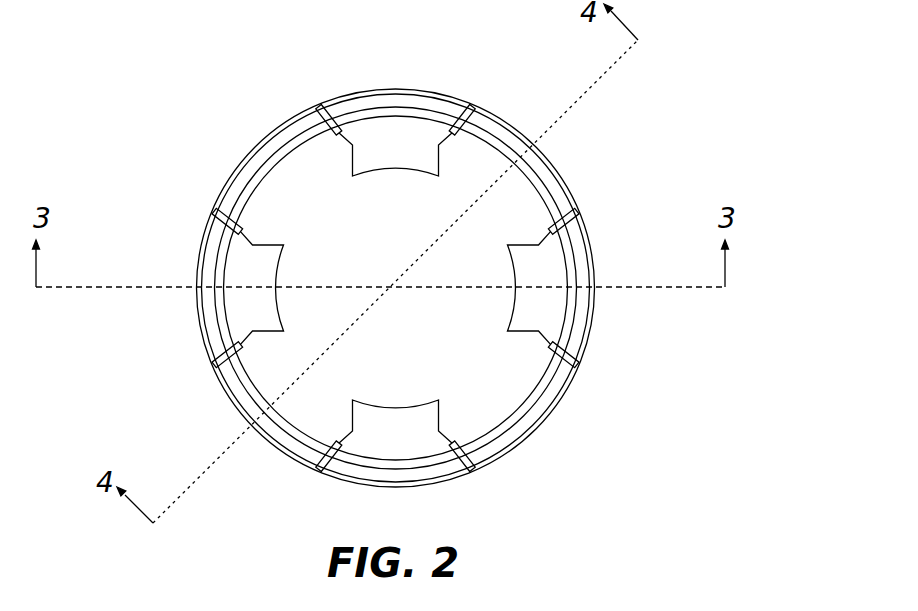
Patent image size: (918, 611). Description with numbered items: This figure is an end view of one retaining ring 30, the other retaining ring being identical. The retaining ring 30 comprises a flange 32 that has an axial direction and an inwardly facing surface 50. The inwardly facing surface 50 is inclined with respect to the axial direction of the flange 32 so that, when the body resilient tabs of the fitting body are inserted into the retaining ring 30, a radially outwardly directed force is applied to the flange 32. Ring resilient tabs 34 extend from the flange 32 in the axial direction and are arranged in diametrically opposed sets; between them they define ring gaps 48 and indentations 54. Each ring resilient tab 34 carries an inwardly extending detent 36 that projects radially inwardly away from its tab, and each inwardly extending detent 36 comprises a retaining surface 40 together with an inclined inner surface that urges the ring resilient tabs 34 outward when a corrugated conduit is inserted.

The retaining ring 30 is at (393, 84).
The flange 32 is at (272, 126).
The ring resilient tab 34 is at (430, 100).
The inwardly extending detent 36 is at (417, 147).
The retaining surface 40 is at (258, 268).
The ring gap 48 is at (268, 372).
The inwardly facing surface 50 is at (305, 130).
The indentation 54 is at (275, 193).